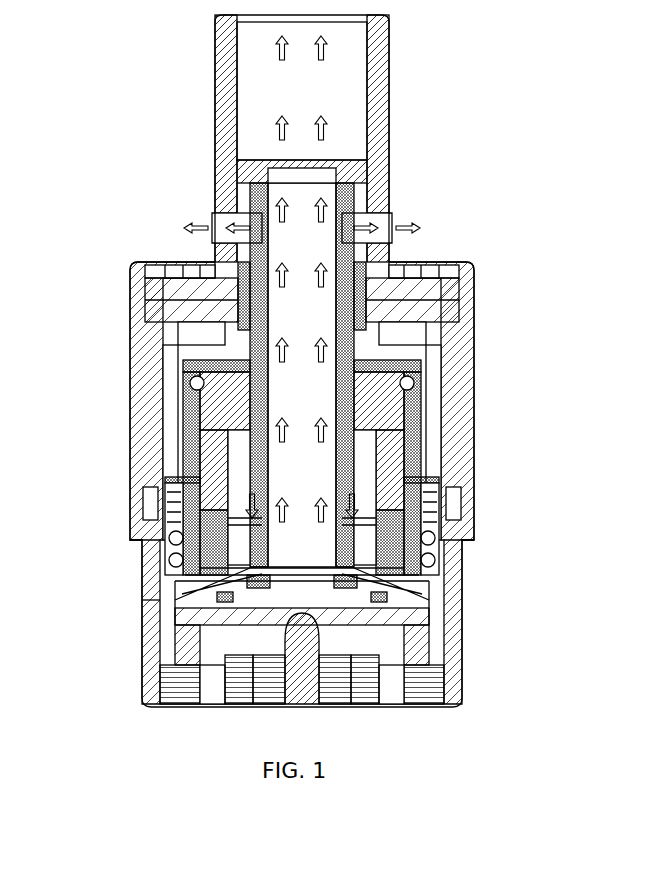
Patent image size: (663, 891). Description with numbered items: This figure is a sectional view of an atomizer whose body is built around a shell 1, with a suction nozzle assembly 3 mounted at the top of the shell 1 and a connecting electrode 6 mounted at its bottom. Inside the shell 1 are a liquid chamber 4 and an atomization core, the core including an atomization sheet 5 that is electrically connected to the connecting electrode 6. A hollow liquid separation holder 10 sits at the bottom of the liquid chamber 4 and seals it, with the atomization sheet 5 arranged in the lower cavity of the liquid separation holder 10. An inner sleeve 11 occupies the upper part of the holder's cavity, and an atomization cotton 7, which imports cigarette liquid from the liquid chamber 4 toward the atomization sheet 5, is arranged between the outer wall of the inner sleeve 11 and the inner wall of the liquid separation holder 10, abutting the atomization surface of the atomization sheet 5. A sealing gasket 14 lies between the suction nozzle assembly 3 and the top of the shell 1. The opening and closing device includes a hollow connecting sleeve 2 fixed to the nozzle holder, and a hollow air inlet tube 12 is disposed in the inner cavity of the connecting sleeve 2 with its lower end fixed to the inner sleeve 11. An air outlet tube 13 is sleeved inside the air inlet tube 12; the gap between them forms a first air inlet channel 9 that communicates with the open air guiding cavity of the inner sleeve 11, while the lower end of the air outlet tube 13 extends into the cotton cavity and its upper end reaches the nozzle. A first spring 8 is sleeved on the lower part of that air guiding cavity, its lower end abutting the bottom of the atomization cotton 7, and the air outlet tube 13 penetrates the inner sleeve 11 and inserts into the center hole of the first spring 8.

The shell 1 is at (133, 480).
The connecting sleeve 2 is at (215, 172).
The suction nozzle assembly 3 is at (378, 133).
The liquid chamber 4 is at (160, 322).
The atomization sheet 5 is at (140, 610).
The connecting electrode 6 is at (225, 702).
The atomization cotton 7 is at (420, 432).
The first spring 8 is at (430, 518).
The first air inlet channel 9 is at (190, 386).
The liquid separation holder 10 is at (457, 578).
The inner sleeve 11 is at (175, 367).
The air inlet tube 12 is at (195, 217).
The air outlet tube 13 is at (370, 205).
The sealing gasket 14 is at (463, 290).